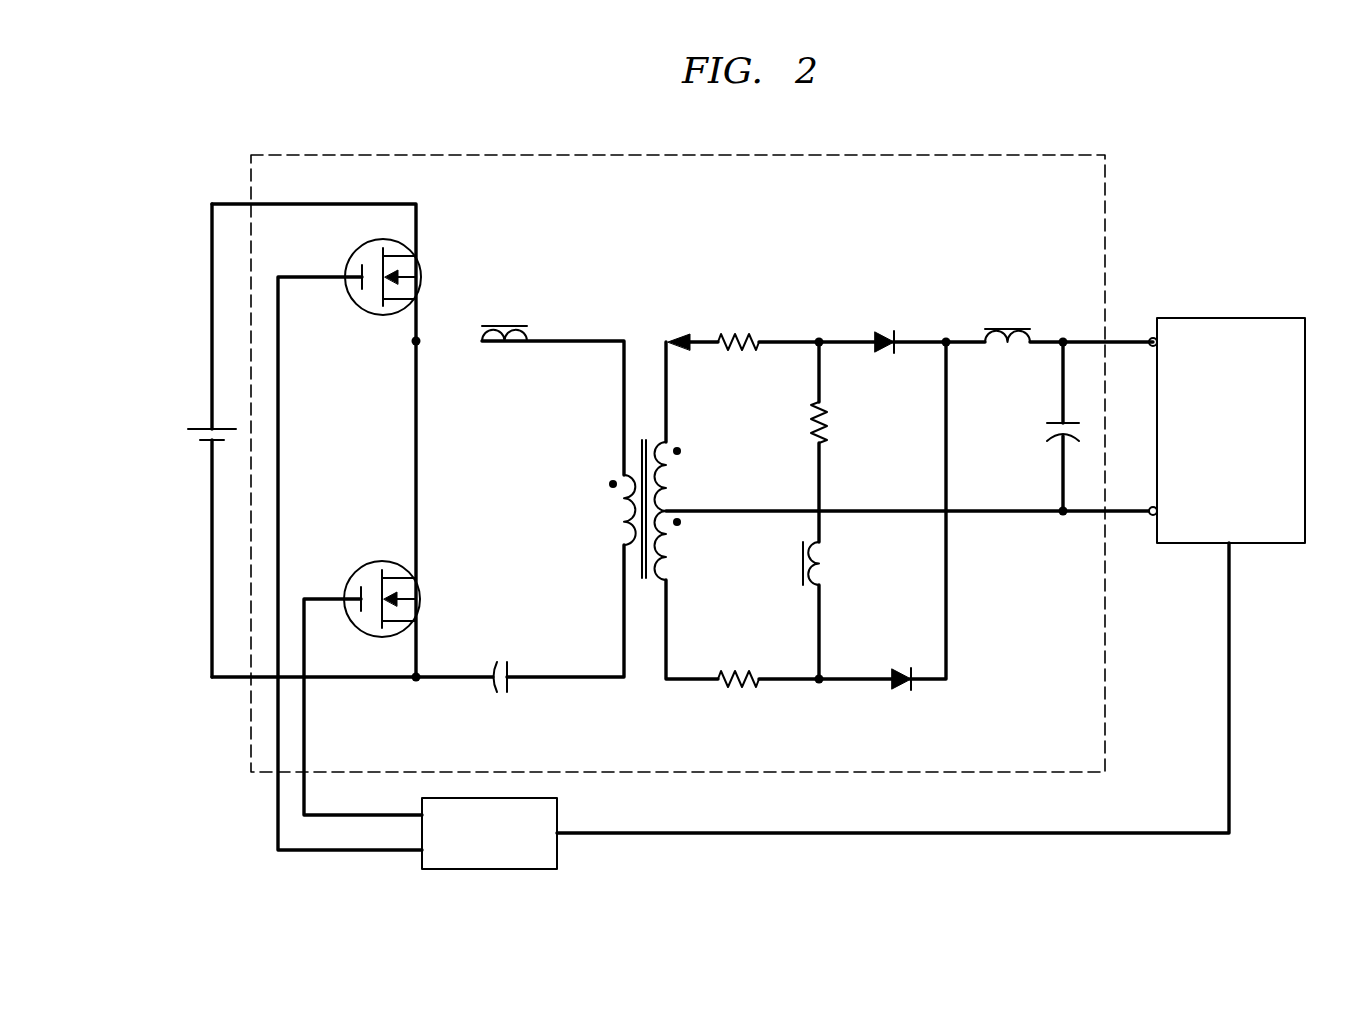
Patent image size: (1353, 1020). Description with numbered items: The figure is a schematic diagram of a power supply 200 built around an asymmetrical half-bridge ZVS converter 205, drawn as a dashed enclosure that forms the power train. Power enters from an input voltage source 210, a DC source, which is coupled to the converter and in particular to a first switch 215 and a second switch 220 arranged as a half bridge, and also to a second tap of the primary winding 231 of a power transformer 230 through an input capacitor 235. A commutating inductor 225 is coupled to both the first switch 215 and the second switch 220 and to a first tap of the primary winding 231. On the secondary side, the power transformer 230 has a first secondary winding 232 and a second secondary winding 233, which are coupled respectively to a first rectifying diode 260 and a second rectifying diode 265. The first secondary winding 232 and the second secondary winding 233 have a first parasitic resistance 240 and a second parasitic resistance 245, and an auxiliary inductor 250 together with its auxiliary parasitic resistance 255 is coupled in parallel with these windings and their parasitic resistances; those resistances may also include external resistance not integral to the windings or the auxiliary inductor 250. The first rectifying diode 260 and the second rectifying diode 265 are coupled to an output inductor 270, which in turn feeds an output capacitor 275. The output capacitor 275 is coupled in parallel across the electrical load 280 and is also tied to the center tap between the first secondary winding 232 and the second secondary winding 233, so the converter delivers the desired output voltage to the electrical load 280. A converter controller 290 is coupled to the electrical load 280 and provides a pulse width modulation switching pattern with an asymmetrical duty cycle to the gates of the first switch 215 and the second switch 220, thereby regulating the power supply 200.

The power supply 200 is at (1028, 130).
The asymmetrical half-bridge ZVS converter 205 is at (251, 173).
The input voltage source 210 is at (206, 428).
The first switch 215 is at (366, 314).
The second switch 220 is at (372, 570).
The commutating inductor 225 is at (506, 325).
The power transformer 230 is at (641, 438).
The primary winding 231 is at (614, 510).
The first secondary winding 232 is at (682, 478).
The second secondary winding 233 is at (668, 544).
The input capacitor 235 is at (510, 690).
The first parasitic resistance 240 is at (736, 354).
The second parasitic resistance 245 is at (736, 690).
The auxiliary inductor 250 is at (822, 566).
The auxiliary parasitic resistance 255 is at (810, 422).
The first rectifying diode 260 is at (890, 336).
The second rectifying diode 265 is at (902, 696).
The output inductor 270 is at (1007, 326).
The output capacitor 275 is at (1048, 423).
The electrical load 280 is at (1228, 318).
The converter controller 290 is at (560, 816).